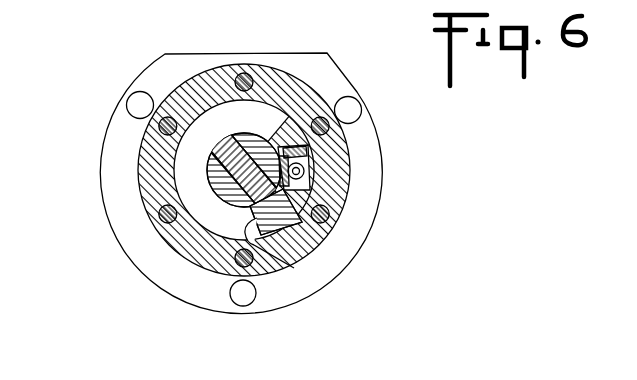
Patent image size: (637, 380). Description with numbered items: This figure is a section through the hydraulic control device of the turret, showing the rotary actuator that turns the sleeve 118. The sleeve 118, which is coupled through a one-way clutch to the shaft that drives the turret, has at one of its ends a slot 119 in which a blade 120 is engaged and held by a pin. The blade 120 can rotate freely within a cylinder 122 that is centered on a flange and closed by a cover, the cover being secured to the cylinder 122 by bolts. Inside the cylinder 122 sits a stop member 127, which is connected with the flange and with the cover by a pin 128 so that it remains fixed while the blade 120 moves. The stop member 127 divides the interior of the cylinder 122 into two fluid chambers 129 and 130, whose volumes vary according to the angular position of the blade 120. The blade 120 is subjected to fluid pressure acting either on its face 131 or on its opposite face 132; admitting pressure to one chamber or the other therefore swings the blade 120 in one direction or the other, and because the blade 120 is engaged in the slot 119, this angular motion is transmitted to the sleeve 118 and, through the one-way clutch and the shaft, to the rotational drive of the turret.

The sleeve 118 is at (314, 138).
The slot 119 is at (262, 138).
The blade 120 is at (282, 222).
The cylinder 122 is at (182, 240).
The stop member 127 is at (306, 159).
The pin 128 is at (306, 164).
The fluid chamber 129 is at (308, 177).
The fluid chamber 130 is at (182, 179).
The face 131 is at (298, 196).
The face 132 is at (290, 258).